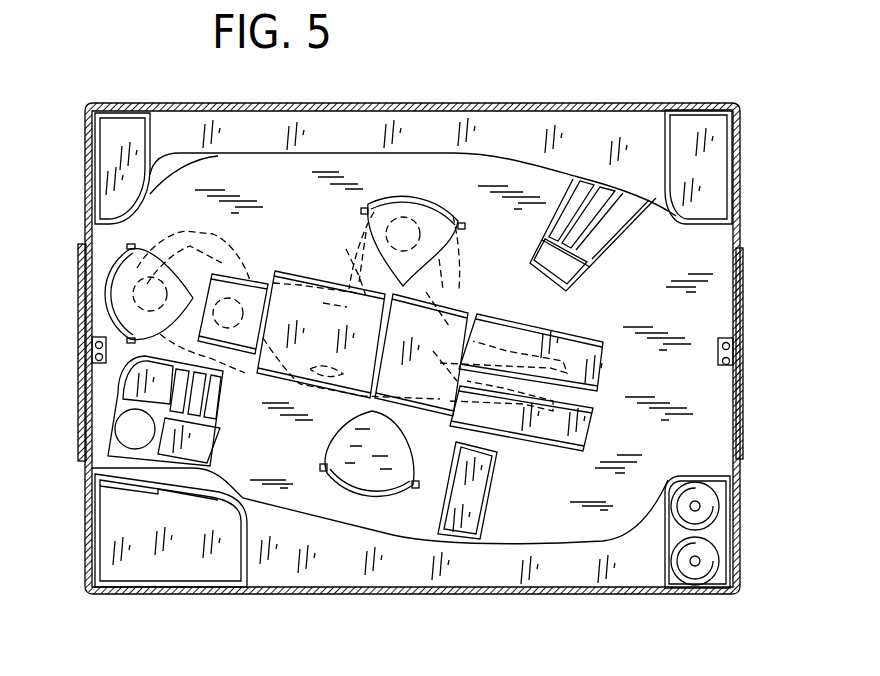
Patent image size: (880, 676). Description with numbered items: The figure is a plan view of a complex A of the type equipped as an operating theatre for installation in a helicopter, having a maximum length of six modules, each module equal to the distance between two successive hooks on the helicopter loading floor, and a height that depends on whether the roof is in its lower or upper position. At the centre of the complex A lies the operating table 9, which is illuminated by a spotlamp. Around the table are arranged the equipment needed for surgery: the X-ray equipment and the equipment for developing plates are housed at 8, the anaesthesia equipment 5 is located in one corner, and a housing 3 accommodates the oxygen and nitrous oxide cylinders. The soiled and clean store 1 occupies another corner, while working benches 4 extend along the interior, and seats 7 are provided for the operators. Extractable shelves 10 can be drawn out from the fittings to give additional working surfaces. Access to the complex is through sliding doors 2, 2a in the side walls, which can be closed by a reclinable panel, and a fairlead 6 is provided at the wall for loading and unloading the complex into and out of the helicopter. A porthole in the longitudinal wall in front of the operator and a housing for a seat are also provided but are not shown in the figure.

The complex A is at (659, 96).
The soiled and clean store 1 is at (708, 173).
The sliding doors 2 is at (80, 412).
The case lid side wall 2a is at (745, 300).
The housing for oxygen and nitrous oxide cylinders 3 is at (720, 530).
The working benches 4 is at (485, 568).
The anaesthesia equipment 5 is at (115, 527).
The fairlead 6 is at (90, 347).
The seats for operators 7 is at (115, 292).
The housing for X-ray equipment and plate developing equipment 8 is at (108, 155).
The operating table 9 is at (308, 310).
The extractable shelves 10 is at (620, 215).